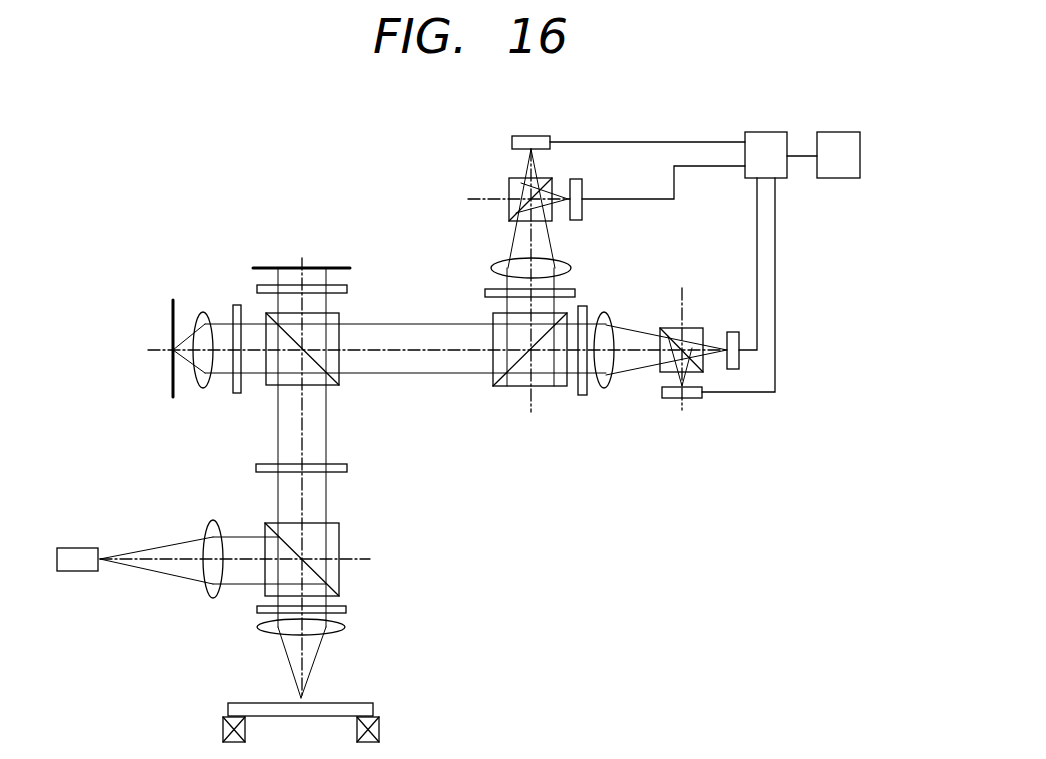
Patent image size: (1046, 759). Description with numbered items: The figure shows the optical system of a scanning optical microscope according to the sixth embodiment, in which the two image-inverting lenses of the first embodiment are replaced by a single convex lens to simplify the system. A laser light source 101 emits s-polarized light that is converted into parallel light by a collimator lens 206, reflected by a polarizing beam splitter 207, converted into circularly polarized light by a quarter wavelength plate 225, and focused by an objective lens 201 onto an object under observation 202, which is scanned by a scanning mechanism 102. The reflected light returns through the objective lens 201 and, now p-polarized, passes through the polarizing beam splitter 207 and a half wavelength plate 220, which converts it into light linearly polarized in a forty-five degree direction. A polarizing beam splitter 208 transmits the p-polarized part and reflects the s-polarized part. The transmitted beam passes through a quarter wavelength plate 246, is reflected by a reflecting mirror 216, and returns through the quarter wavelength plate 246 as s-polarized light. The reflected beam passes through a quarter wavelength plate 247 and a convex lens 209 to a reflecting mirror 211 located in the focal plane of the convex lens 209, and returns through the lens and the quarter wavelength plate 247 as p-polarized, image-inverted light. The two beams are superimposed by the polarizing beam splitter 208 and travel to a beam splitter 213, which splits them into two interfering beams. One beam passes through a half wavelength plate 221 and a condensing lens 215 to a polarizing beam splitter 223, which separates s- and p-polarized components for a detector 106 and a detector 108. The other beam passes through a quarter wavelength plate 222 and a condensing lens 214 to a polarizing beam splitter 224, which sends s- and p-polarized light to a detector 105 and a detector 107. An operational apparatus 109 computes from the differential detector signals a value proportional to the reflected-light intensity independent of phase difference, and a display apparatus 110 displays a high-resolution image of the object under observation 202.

The laser light source 101 is at (80, 548).
The scanning mechanism 102 is at (380, 727).
The detector 105 is at (512, 143).
The detector 106 is at (730, 332).
The detector 107 is at (582, 182).
The detector 108 is at (680, 398).
The operational apparatus 109 is at (765, 132).
The display apparatus 110 is at (840, 132).
The objective lens 201 is at (260, 632).
The object under observation 202 is at (362, 703).
The collimator lens 206 is at (211, 522).
The polarizing beam splitter 207 is at (340, 582).
The polarizing beam splitter 208 is at (270, 386).
The convex lens 209 is at (202, 312).
The reflecting mirror 211 is at (172, 302).
The beam splitter 213 is at (494, 318).
The condensing lens 214 is at (492, 262).
The condensing lens 215 is at (608, 312).
The reflecting mirror 216 is at (292, 268).
The half wavelength plate 220 is at (348, 467).
The half wavelength plate 221 is at (582, 306).
The quarter wavelength plate 222 is at (487, 291).
The polarizing beam splitter 223 is at (667, 328).
The polarizing beam splitter 224 is at (509, 190).
The quarter wavelength plate 225 is at (257, 609).
The quarter wavelength plate 246 is at (347, 289).
The quarter wavelength plate 247 is at (237, 305).